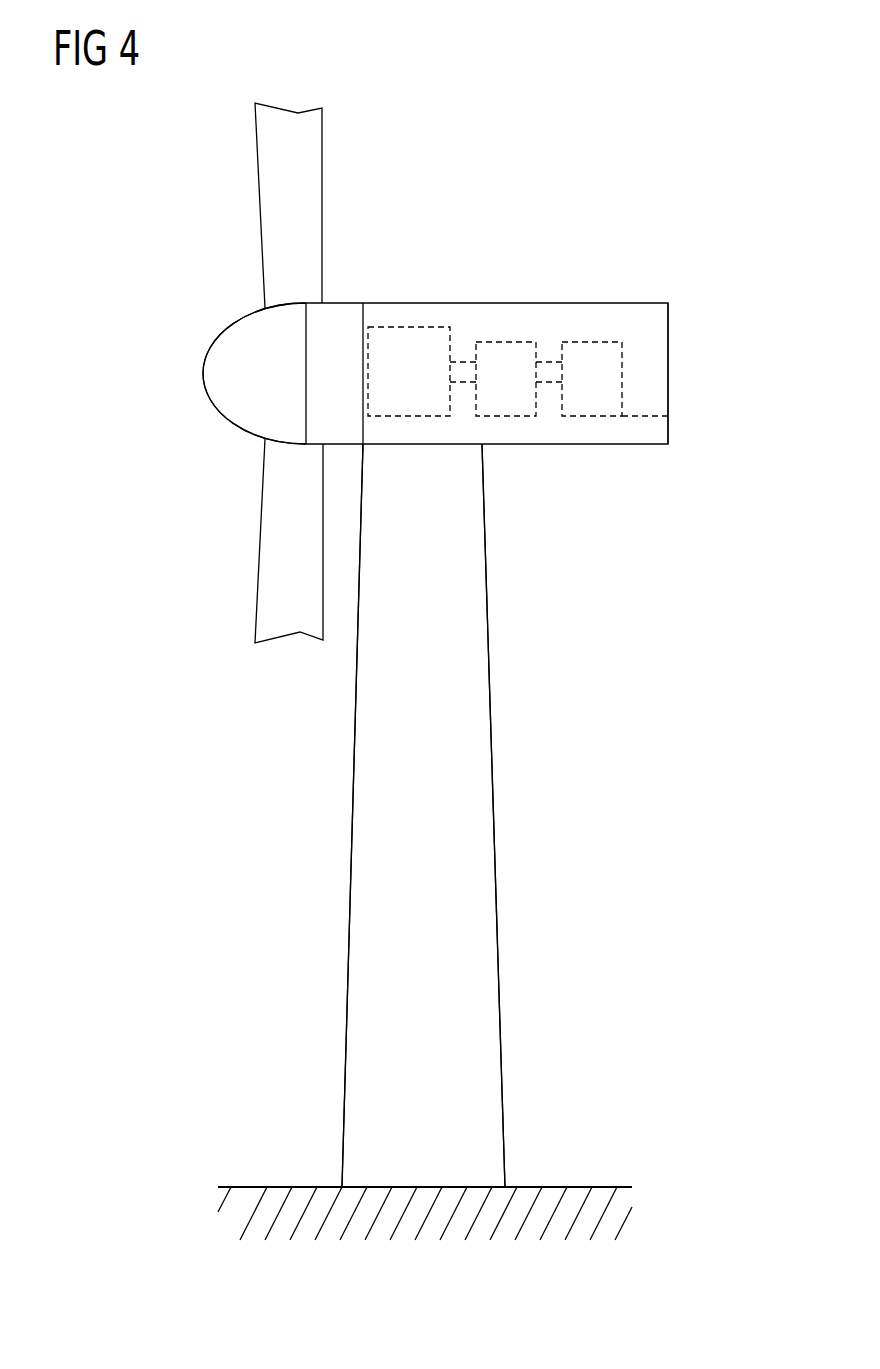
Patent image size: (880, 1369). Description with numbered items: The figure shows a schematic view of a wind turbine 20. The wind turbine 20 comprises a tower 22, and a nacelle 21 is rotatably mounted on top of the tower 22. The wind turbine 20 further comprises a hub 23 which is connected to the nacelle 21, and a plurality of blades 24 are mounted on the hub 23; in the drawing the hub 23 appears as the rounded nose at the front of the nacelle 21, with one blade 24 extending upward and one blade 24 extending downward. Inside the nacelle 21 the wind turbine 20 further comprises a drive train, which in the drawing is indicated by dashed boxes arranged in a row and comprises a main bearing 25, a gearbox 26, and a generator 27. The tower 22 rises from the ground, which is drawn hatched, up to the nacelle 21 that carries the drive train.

The wind turbine 20 is at (585, 147).
The nacelle 21 is at (668, 367).
The tower 22 is at (475, 760).
The hub 23 is at (225, 376).
The blades 24 is at (278, 176).
The main bearing 25 is at (422, 391).
The gearbox 26 is at (520, 396).
The generator 27 is at (608, 396).